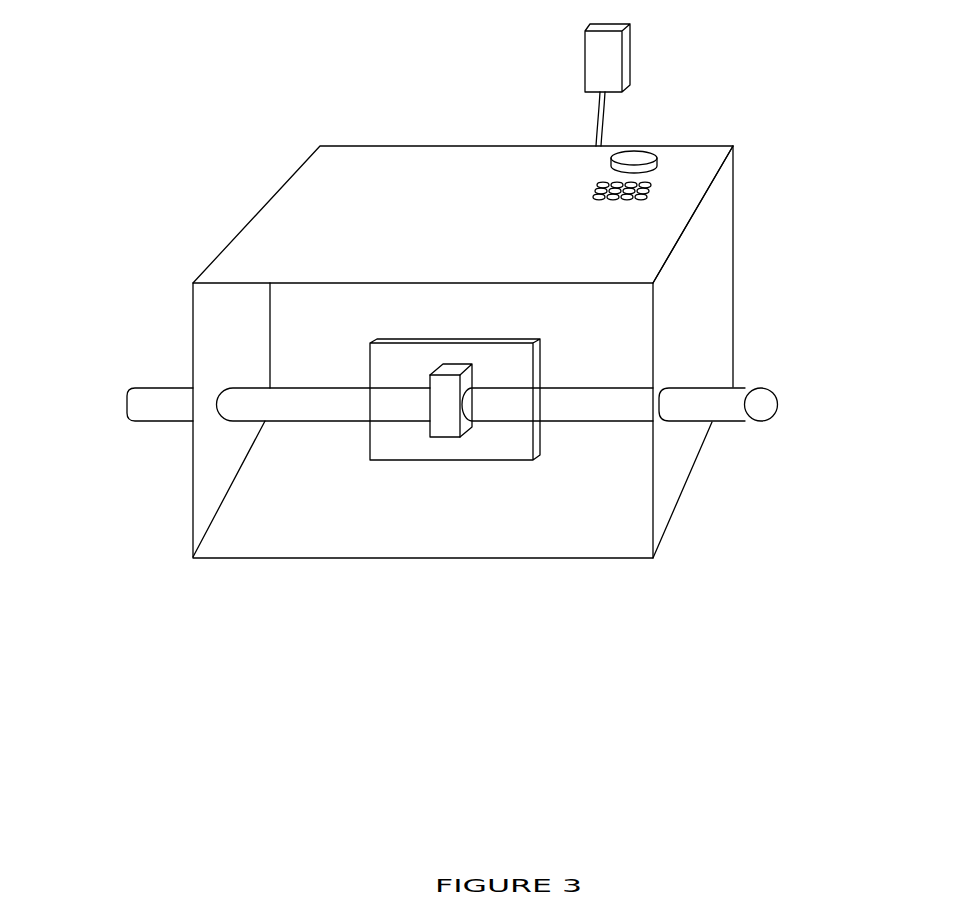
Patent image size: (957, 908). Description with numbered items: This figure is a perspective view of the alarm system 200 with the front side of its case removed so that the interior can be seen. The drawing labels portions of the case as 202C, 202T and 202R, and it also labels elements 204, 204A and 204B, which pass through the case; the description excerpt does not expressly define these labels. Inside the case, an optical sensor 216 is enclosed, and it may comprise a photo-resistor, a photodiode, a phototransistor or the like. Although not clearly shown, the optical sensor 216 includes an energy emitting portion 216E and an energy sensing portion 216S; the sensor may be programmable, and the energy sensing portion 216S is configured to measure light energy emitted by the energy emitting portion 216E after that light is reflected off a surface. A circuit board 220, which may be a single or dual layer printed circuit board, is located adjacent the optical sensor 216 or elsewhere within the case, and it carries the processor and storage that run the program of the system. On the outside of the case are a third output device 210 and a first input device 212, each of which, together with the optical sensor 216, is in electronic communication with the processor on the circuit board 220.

The alarm system 200 is at (333, 58).
The container 202C is at (175, 268).
The container top wall 202T is at (338, 213).
The container right wall 202R is at (705, 290).
The pipe 204 is at (163, 392).
The pipe inlet section 204A is at (125, 402).
The pipe outlet section 204B is at (758, 420).
The third output device 210 is at (652, 182).
The first input device 212 is at (648, 148).
The optical sensor 216 is at (453, 430).
The energy sensing portion 216S is at (443, 384).
The energy emitting portion 216E is at (444, 420).
The circuit board 220 is at (497, 366).